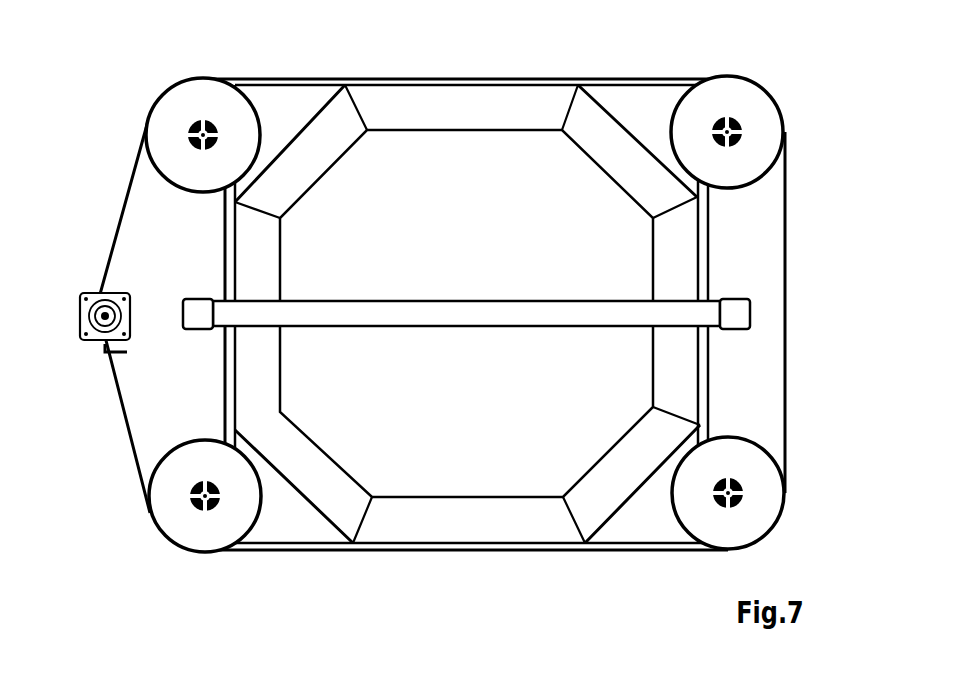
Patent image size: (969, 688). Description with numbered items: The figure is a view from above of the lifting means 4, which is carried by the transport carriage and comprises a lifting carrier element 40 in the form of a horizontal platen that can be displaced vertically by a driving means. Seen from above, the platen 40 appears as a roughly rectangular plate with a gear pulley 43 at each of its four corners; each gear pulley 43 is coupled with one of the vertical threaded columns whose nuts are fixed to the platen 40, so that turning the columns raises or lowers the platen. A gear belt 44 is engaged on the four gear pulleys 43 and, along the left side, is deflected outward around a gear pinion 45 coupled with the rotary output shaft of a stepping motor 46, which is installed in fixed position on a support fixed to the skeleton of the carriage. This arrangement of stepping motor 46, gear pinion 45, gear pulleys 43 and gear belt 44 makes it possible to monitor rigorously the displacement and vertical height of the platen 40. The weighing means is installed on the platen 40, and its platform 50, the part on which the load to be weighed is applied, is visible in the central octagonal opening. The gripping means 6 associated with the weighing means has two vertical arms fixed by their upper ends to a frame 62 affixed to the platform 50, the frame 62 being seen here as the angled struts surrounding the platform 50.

The lifting means 4 is at (111, 317).
The gripping means 6 is at (494, 277).
The lifting carrier element 40 is at (651, 125).
The gear pulleys 43 is at (183, 122).
The gear belt 44 is at (122, 425).
The gear pinion 45 is at (115, 293).
The stepping motor 46 is at (125, 330).
The platform 50 is at (497, 235).
The frame 62 is at (343, 120).